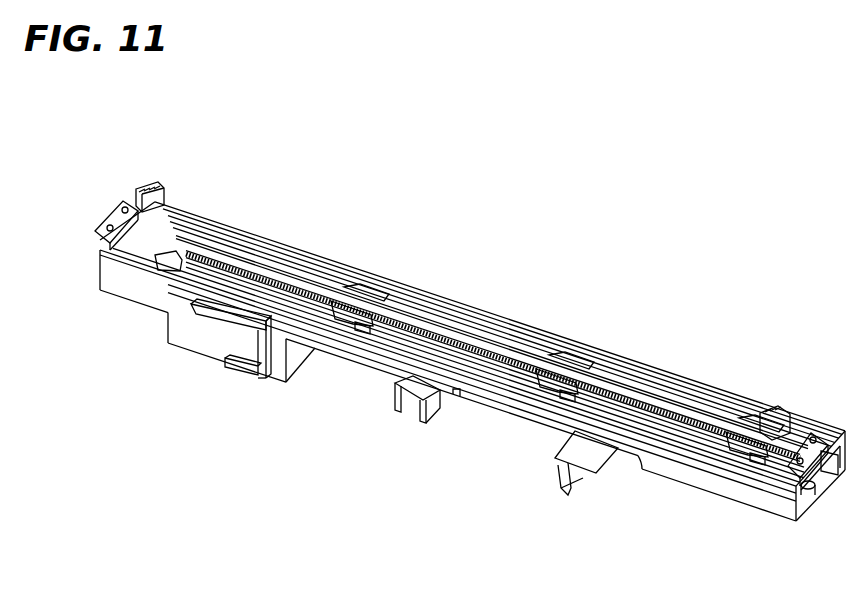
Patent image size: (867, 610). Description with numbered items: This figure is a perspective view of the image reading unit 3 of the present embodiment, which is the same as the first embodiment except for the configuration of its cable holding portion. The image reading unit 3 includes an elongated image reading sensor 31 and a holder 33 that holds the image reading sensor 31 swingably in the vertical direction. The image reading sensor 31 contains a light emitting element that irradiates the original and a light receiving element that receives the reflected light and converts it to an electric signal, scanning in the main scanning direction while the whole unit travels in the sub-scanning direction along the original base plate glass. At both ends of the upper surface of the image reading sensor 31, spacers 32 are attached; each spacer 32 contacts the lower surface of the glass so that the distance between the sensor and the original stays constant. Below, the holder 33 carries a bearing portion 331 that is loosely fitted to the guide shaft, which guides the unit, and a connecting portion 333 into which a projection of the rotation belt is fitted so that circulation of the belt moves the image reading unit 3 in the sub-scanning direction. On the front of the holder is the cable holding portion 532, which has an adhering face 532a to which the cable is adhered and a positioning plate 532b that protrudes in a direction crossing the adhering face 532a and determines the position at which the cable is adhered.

The image reading unit 3 is at (488, 300).
The image reading sensor 31 is at (677, 423).
The spacer 32 is at (112, 198).
The holder 33 is at (125, 275).
The bearing portion 331 is at (403, 397).
The connecting portion 333 is at (460, 390).
The cable holding portion 532 is at (231, 368).
The adhering face 532a is at (170, 320).
The positioning plate 532b is at (197, 313).